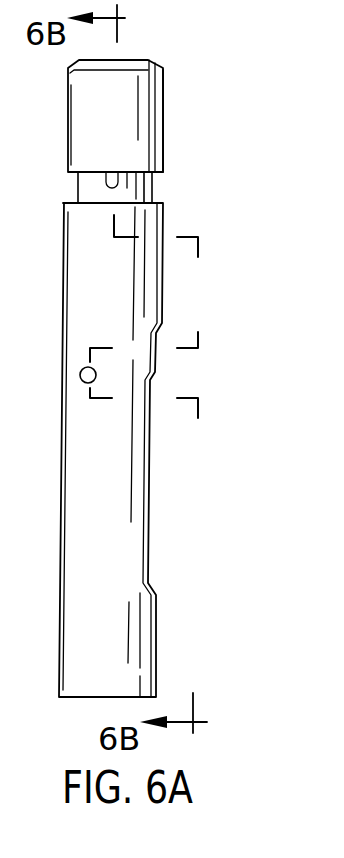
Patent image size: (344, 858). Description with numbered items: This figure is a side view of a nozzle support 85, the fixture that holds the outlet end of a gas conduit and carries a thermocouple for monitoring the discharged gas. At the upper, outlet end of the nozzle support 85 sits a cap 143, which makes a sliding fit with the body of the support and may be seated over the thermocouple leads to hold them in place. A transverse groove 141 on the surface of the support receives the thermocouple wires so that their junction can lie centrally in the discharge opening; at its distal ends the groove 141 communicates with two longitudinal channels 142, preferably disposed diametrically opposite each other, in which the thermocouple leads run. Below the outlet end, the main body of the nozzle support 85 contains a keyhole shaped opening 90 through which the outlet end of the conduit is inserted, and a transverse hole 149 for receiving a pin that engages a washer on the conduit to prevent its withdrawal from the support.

The transverse groove 141 is at (125, 60).
The cap 143 is at (163, 133).
The longitudinal channels 142 is at (107, 183).
The keyhole shaped opening 90 is at (149, 540).
The transverse hole 149 is at (80, 375).
The nozzle support 85 is at (228, 350).